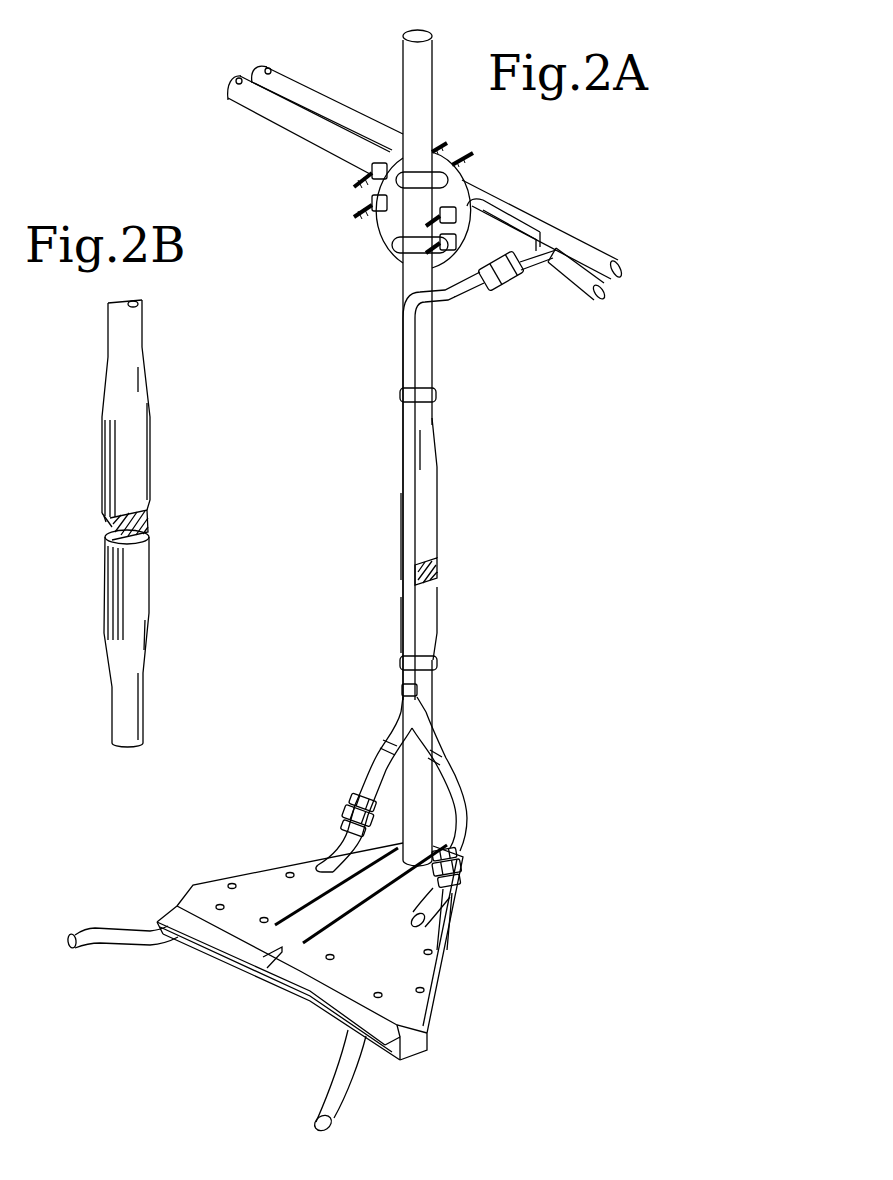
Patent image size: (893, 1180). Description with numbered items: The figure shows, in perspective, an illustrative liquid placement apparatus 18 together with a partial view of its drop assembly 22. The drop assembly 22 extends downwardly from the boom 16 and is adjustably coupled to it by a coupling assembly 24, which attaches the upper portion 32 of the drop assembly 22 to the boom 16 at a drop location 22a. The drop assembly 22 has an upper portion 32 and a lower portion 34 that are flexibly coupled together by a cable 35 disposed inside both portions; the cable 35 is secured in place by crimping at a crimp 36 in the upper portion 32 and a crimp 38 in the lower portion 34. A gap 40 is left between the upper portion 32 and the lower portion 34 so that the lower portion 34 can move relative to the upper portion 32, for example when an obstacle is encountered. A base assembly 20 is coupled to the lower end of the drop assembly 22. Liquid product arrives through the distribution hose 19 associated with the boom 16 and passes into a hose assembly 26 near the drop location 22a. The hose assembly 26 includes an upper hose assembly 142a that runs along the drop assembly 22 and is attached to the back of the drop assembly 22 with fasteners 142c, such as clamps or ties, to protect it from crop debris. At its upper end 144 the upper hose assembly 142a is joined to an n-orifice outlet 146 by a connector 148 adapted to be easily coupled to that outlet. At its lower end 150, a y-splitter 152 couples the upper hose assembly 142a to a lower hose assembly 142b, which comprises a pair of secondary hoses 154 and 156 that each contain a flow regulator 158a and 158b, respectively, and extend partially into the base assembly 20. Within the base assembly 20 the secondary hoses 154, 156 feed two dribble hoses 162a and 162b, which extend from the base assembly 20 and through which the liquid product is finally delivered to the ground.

In FIG. 2A, the boom 16 is at (312, 143).
In FIG. 2A, the liquid placement apparatus 18 is at (436, 448).
In FIG. 2A, the distribution hose 19 is at (590, 243).
In FIG. 2A, the base assembly 20 is at (240, 1002).
In FIG. 2A, the drop assembly 22 is at (398, 473).
In FIG. 2A, the drop location 22a is at (469, 184).
In FIG. 2A, the coupling assembly 24 is at (386, 240).
In FIG. 2A, the hose assembly 26 is at (482, 331).
In FIG. 2A, the upper portion 32 is at (435, 425).
In FIG. 2B, the upper portion 32 is at (143, 343).
In FIG. 2A, the lower portion 34 is at (439, 632).
In FIG. 2B, the lower portion 34 is at (147, 660).
In FIG. 2A, the cable 35 is at (437, 567).
In FIG. 2B, the cable 35 is at (148, 514).
In FIG. 2B, the crimp 36 is at (151, 443).
In FIG. 2B, the crimp 38 is at (151, 573).
In FIG. 2A, the gap 40 is at (439, 572).
In FIG. 2B, the gap 40 is at (107, 522).
In FIG. 2A, the upper hose assembly 142a is at (405, 359).
In FIG. 2A, the lower hose assembly 142b is at (402, 817).
In FIG. 2A, the fasteners 142c is at (402, 398).
In FIG. 2A, the upper end 144 is at (473, 296).
In FIG. 2A, the n-orifice outlet 146 is at (545, 275).
In FIG. 2A, the connector 148 is at (506, 285).
In FIG. 2A, the lower end 150 is at (403, 664).
In FIG. 2A, the y-splitter 152 is at (402, 716).
In FIG. 2A, the secondary hose 154 is at (378, 748).
In FIG. 2A, the secondary hose 156 is at (450, 772).
In FIG. 2A, the flow regulator 158a is at (346, 818).
In FIG. 2A, the flow regulator 158b is at (462, 872).
In FIG. 2A, the dribble hose 162a is at (72, 948).
In FIG. 2A, the dribble hose 162b is at (312, 1121).